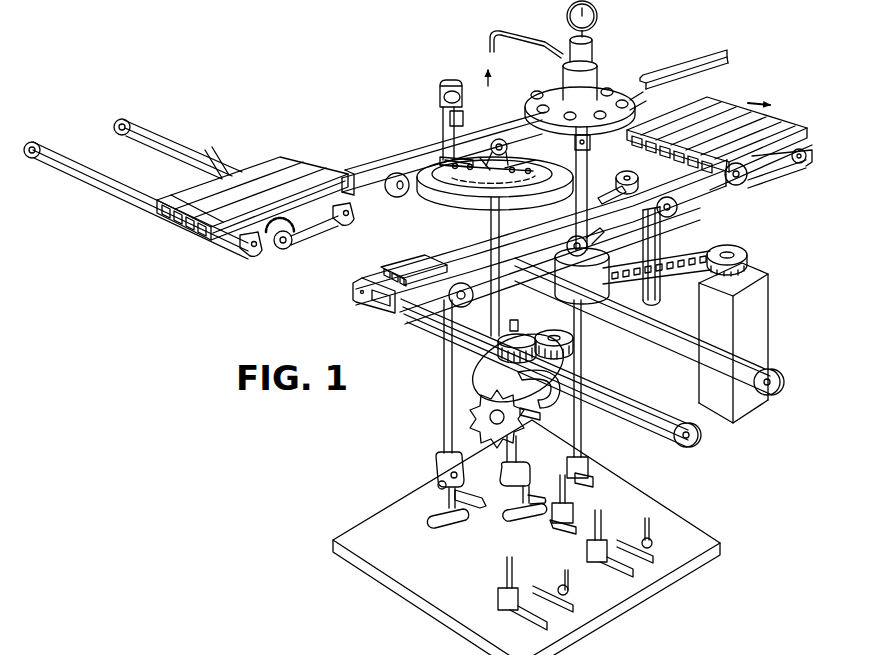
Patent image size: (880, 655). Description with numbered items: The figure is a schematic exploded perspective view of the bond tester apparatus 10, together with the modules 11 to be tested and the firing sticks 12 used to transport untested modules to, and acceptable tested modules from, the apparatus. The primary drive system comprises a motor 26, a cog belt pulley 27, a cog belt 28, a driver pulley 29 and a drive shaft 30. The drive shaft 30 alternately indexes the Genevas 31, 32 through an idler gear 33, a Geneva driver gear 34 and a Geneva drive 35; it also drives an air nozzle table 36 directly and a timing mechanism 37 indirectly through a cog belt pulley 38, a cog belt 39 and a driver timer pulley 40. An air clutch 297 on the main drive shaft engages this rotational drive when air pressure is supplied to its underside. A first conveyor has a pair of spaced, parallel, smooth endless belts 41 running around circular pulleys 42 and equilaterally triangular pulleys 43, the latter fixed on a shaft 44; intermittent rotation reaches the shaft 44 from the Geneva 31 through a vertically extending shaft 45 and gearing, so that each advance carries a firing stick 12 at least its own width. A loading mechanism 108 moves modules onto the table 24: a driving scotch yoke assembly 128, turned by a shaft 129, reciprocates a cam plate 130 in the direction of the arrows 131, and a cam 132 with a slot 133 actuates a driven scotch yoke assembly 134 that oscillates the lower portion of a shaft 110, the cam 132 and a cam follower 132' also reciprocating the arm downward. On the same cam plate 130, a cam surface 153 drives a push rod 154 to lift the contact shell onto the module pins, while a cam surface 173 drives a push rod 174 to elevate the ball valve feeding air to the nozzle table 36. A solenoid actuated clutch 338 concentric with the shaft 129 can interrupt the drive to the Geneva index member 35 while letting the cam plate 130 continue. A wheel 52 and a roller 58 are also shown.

The bond tester apparatus 10 is at (238, 327).
The module 11 is at (213, 232).
The firing stick 12 is at (285, 160).
The table 24 is at (432, 208).
The motor 26 is at (660, 236).
The cog belt pulley 27 is at (632, 175).
The cog belt 28 is at (598, 184).
The driver pulley 29 is at (604, 240).
The drive shaft 30 is at (573, 142).
The Geneva 31 is at (522, 430).
The Geneva 32 is at (539, 390).
The idler gear 33 is at (578, 360).
The Geneva driver gear 34 is at (510, 338).
The Geneva drive 35 is at (541, 416).
The air nozzle table 36 is at (602, 88).
The timing mechanism 37 is at (766, 323).
The cog belt pulley 38 is at (570, 298).
The cog belt 39 is at (682, 284).
The driver timer pulley 40 is at (738, 248).
The endless belt 41 is at (176, 156).
The pulley 42 is at (118, 122).
The pulley 43 is at (248, 255).
The shaft 44 is at (283, 250).
The vertically extending shaft 45 is at (490, 234).
The wheel 52 is at (399, 198).
The roller 58 is at (510, 322).
The loading mechanism 108 is at (430, 93).
The shaft 110 is at (442, 408).
The driving scotch yoke assembly 128 is at (527, 522).
The shaft 129 is at (505, 458).
The cam plate 130 is at (655, 502).
The arrows 131 is at (410, 565).
The cam 132 is at (467, 513).
The cam follower 132' is at (430, 468).
The slot 133 is at (436, 528).
The driven scotch yoke assembly 134 is at (440, 502).
The cam surface 153 is at (572, 530).
The push rod 154 is at (578, 504).
The cam surface 173 is at (594, 480).
The push rod 174 is at (582, 426).
The air clutch 297 is at (647, 262).
The solenoid actuated clutch 338 is at (478, 384).